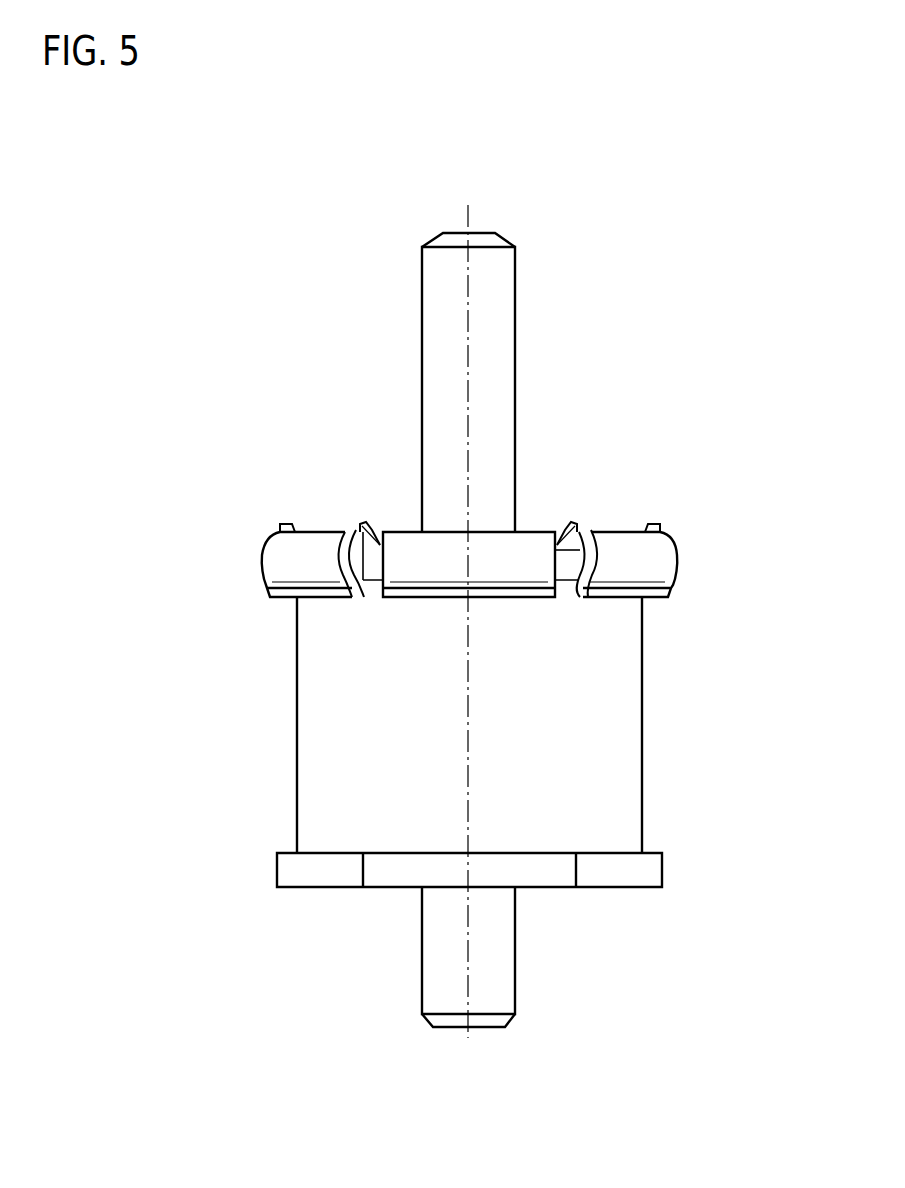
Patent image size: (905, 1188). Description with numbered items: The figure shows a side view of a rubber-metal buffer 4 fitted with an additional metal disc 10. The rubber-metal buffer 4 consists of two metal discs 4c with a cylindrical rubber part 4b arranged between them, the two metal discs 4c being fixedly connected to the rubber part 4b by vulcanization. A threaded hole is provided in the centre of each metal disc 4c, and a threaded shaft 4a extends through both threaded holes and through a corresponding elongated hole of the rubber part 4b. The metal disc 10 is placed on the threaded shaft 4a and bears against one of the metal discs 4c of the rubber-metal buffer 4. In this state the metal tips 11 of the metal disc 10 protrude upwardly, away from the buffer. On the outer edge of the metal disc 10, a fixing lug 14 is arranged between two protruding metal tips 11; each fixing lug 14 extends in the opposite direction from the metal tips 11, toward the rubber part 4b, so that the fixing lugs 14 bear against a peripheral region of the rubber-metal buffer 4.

The rubber-metal buffer 4 is at (247, 655).
The threaded shaft 4a is at (490, 353).
The rubber part 4b is at (597, 695).
The metal disc 4c is at (558, 550).
The metal disc 10 is at (685, 535).
The metal tips 11 is at (287, 522).
The fixing lug 14 is at (290, 566).